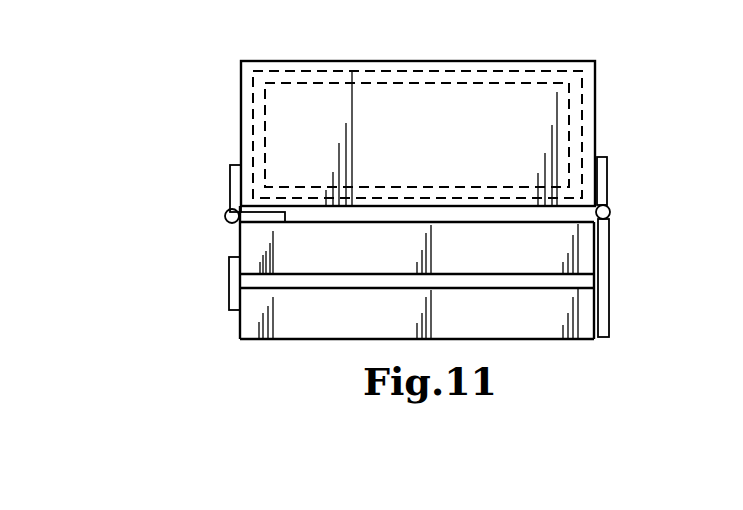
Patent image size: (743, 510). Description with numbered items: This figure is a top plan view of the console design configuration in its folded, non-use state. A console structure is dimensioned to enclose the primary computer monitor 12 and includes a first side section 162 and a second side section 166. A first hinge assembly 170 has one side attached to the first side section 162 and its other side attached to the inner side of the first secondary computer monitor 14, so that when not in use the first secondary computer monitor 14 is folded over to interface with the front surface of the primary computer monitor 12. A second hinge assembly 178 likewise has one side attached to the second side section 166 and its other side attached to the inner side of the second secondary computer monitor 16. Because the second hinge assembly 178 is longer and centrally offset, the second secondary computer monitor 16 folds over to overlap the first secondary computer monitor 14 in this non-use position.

The primary computer monitor 12 is at (441, 138).
The first secondary computer monitor 14 is at (417, 249).
The second secondary computer monitor 16 is at (417, 313).
The first side section 162 is at (241, 101).
The second side section 166 is at (595, 92).
The first hinge assembly 170 is at (230, 190).
The second hinge assembly 178 is at (609, 211).